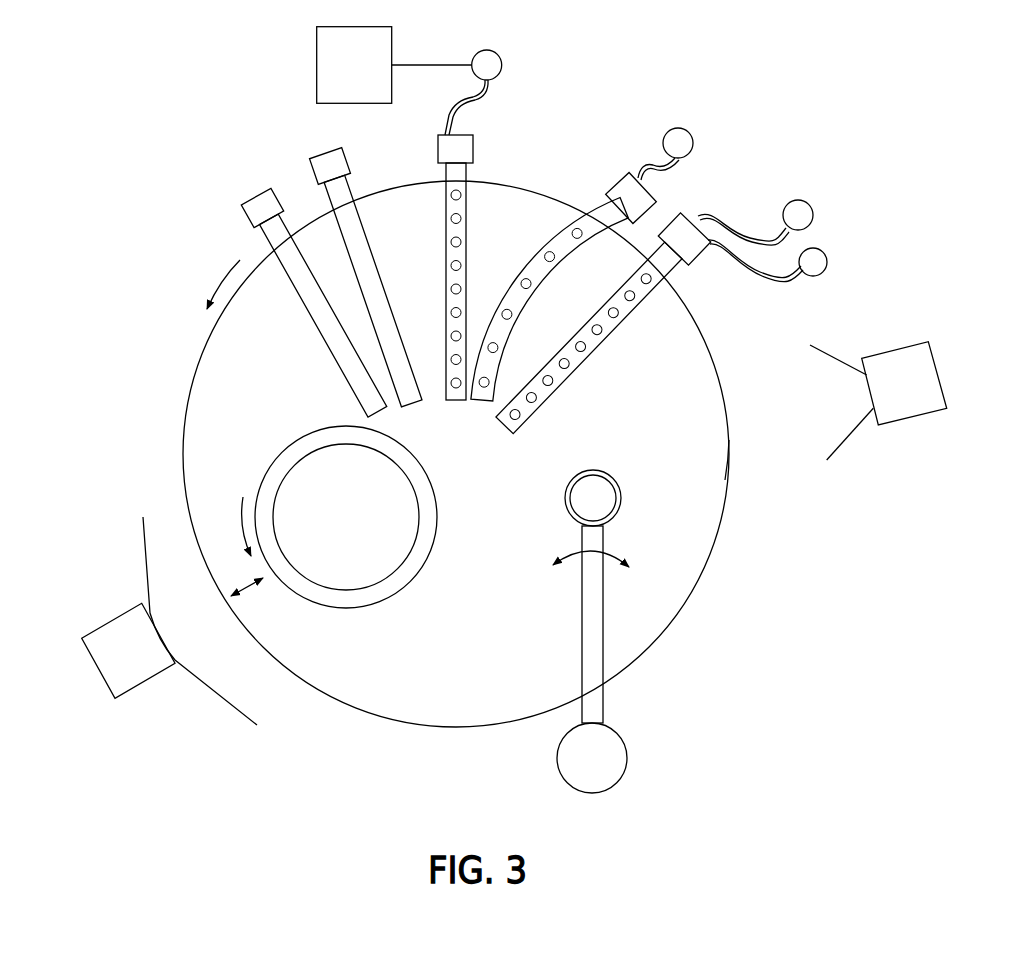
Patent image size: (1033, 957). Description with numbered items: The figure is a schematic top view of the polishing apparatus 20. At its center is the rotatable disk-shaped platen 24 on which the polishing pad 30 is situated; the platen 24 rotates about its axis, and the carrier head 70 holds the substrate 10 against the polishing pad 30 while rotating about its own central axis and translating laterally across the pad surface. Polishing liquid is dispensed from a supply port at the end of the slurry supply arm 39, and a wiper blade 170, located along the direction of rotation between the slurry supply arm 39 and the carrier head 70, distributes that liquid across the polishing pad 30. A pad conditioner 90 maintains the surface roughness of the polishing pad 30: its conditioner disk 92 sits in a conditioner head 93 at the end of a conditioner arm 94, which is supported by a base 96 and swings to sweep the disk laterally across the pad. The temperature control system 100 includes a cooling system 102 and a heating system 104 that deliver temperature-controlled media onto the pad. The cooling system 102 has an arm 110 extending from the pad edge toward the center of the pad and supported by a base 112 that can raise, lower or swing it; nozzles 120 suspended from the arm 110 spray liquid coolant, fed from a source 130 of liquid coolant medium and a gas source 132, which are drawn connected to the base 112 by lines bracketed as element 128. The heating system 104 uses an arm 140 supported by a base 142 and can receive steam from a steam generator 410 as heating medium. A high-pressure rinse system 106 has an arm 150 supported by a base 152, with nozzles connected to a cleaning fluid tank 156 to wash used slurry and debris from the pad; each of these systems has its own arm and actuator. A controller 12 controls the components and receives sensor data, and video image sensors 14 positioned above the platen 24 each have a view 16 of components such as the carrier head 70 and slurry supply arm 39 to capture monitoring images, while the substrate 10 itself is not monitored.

The polishing apparatus 20 is at (69, 140).
The controller 12 is at (354, 65).
The substrate 10 is at (346, 517).
The carrier head 70 is at (272, 463).
The polishing pad 30 is at (678, 548).
The platen 24 is at (731, 448).
The video image sensor 14 is at (514, 520).
The view 16 is at (148, 548).
The slurry supply arm 39 is at (320, 188).
The wiper blade 170 is at (266, 240).
The arm 140 is at (468, 247).
The base 142 is at (473, 148).
The steam generator 410 is at (505, 62).
The nozzles 120 is at (549, 300).
The arm 150 is at (502, 343).
The base 152 is at (627, 176).
The cleaning fluid tank 156 is at (672, 139).
The arm 110 is at (508, 420).
The base 112 is at (688, 213).
The fluid conduits 128 is at (766, 288).
The source of liquid coolant medium 130 is at (813, 208).
The gas source 132 is at (828, 257).
The temperature control system 100 is at (820, 90).
The cooling system 102 is at (750, 206).
The heating system 104 is at (543, 57).
The rinse system 106 is at (638, 144).
The pad conditioner 90 is at (620, 636).
The conditioner disk 92 is at (583, 497).
The conditioner head 93 is at (568, 513).
The conditioner arm 94 is at (588, 637).
The base 96 is at (568, 757).